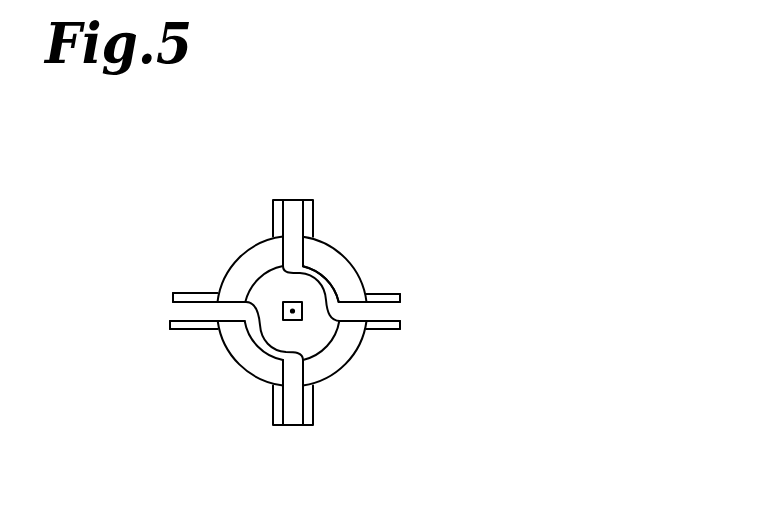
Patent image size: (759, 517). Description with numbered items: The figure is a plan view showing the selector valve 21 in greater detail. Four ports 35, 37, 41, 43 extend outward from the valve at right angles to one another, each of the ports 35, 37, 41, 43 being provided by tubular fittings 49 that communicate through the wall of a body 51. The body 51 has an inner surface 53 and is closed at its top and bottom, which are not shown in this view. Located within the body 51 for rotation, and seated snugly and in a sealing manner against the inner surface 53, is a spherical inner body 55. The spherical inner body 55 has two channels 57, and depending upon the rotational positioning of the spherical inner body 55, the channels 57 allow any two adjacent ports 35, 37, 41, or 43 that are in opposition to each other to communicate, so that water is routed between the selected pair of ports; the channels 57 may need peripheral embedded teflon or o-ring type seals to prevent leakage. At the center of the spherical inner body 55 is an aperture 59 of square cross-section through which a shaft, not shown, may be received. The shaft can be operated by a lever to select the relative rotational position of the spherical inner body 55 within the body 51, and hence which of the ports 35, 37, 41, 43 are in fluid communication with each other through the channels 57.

The selector valve 21 is at (438, 170).
The port 35 is at (293, 211).
The port 37 is at (291, 413).
The port 41 is at (174, 309).
The port 43 is at (391, 310).
The tubular fittings 49 is at (315, 212).
The body 51 is at (345, 253).
The inner surface 53 is at (327, 294).
The spherical inner body 55 is at (272, 284).
The channels 57 is at (337, 298).
The aperture 59 is at (297, 322).